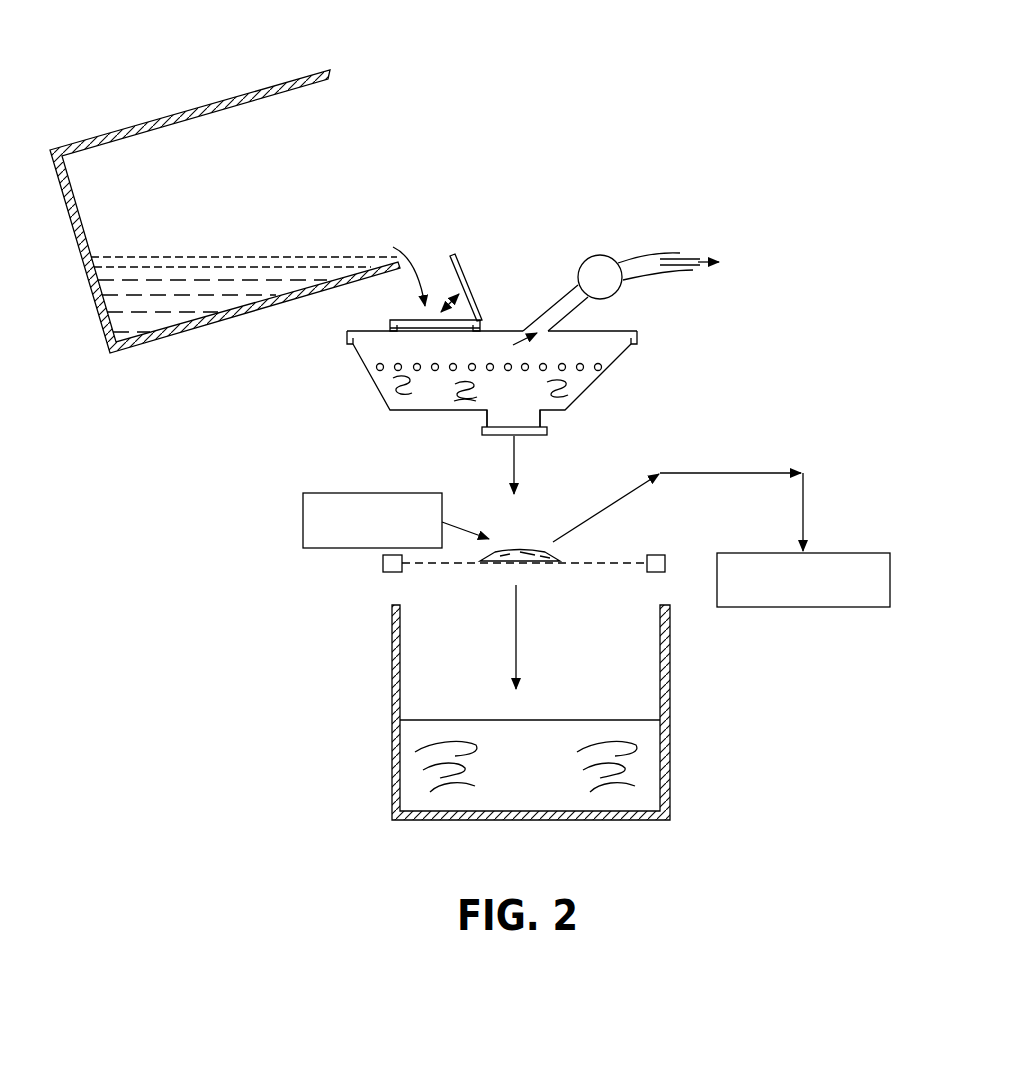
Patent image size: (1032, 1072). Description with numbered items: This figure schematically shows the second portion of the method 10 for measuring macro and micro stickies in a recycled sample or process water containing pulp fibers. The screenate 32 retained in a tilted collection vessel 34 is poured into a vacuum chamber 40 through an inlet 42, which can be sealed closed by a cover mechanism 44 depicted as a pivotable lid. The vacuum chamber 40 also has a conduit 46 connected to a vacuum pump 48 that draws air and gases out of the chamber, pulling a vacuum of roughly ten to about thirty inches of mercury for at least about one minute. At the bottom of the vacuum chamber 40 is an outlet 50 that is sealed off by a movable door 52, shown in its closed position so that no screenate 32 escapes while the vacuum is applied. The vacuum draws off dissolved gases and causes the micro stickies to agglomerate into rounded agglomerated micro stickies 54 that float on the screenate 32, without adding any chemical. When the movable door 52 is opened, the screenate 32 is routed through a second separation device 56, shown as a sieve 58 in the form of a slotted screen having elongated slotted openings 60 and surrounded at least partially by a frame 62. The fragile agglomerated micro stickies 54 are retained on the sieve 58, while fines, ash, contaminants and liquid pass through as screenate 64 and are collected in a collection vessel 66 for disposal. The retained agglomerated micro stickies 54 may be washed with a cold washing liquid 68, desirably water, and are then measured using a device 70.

The method 10 is at (766, 119).
The screenate 32 is at (224, 250).
The collection vessel 34 is at (220, 100).
The vacuum chamber 40 is at (639, 319).
The inlet 42 is at (403, 320).
The cover mechanism 44 is at (463, 277).
The conduit 46 is at (560, 300).
The vacuum pump 48 is at (602, 255).
The outlet 50 is at (487, 420).
The movable door 52 is at (530, 435).
The agglomerated micro stickies 54 is at (435, 363).
The second separation device 56 is at (635, 555).
The sieve 58 is at (572, 562).
The elongated slotted openings 60 is at (413, 563).
The frame 62 is at (658, 553).
The screenate 64 is at (518, 781).
The collection vessel 66 is at (670, 670).
The washing liquid 68 is at (360, 535).
The device 70 is at (792, 592).